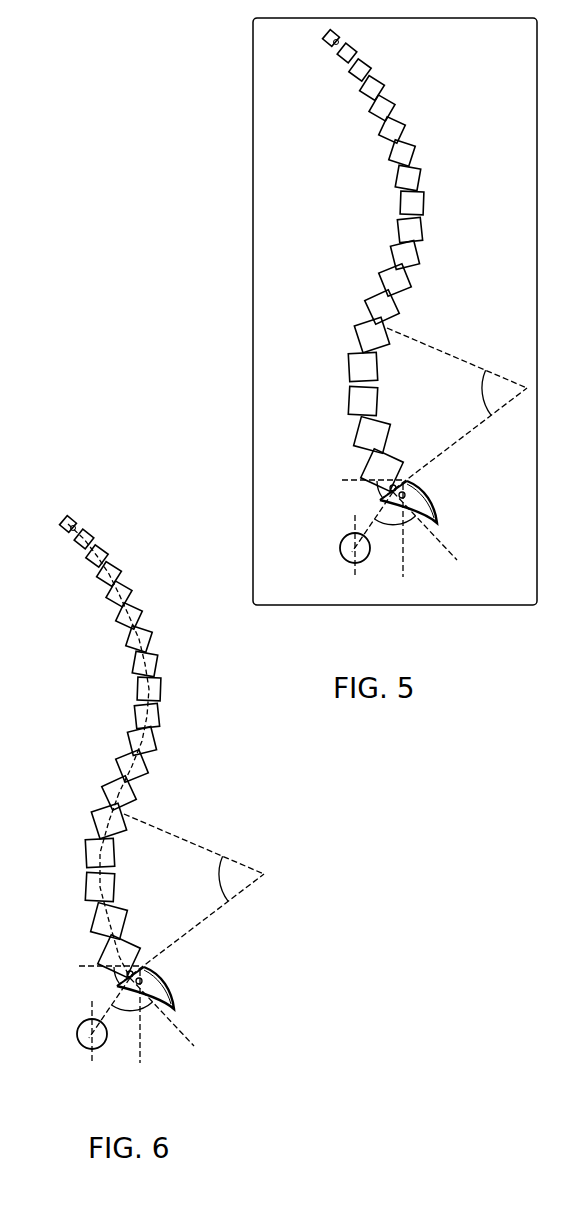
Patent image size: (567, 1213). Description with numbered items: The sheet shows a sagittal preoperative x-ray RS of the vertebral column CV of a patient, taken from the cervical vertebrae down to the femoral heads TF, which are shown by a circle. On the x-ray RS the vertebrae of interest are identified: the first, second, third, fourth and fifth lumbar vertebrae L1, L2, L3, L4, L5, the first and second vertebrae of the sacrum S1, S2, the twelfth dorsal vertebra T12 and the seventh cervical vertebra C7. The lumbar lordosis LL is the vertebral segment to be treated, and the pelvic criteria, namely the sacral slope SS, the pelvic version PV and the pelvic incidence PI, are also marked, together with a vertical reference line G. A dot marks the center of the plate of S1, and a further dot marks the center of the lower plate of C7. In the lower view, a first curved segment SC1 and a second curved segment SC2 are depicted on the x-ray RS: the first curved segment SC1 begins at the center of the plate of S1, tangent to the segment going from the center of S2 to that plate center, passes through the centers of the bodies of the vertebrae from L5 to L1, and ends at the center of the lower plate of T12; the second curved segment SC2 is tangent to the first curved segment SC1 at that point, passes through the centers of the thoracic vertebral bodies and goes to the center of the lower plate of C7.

In FIG. 5, the sagittal preoperative x-ray RS is at (253, 244).
In FIG. 6, the sagittal preoperative x-ray RS is at (12, 205).
In FIG. 5, the vertebral column CV is at (375, 261).
In FIG. 6, the vertebral column CV is at (112, 747).
In FIG. 5, the seventh cervical vertebra C7 is at (321, 38).
In FIG. 6, the seventh cervical vertebra C7 is at (58, 524).
In FIG. 5, the twelfth dorsal vertebra T12 is at (389, 307).
In FIG. 6, the twelfth dorsal vertebra T12 is at (126, 793).
In FIG. 5, the first lumbar vertebra L1 is at (374, 334).
In FIG. 6, the first lumbar vertebra L1 is at (111, 820).
In FIG. 5, the second lumbar vertebra L2 is at (370, 366).
In FIG. 6, the second lumbar vertebra L2 is at (107, 852).
In FIG. 5, the third lumbar vertebra L3 is at (370, 400).
In FIG. 6, the third lumbar vertebra L3 is at (107, 886).
In FIG. 5, the fourth lumbar vertebra L4 is at (378, 435).
In FIG. 6, the fourth lumbar vertebra L4 is at (115, 921).
In FIG. 5, the fifth lumbar vertebra L5 is at (387, 470).
In FIG. 6, the fifth lumbar vertebra L5 is at (124, 956).
In FIG. 5, the first vertebra of the sacrum S1 is at (403, 485).
In FIG. 6, the first vertebra of the sacrum S1 is at (140, 971).
In FIG. 5, the second vertebra of the sacrum S2 is at (409, 502).
In FIG. 6, the second vertebra of the sacrum S2 is at (146, 988).
In FIG. 5, the lumbar lordosis LL is at (453, 414).
In FIG. 6, the lumbar lordosis LL is at (190, 900).
In FIG. 5, the sacral slope SS is at (373, 489).
In FIG. 6, the sacral slope SS is at (110, 975).
In FIG. 5, the pelvic incidence PI is at (416, 526).
In FIG. 6, the pelvic incidence PI is at (153, 1012).
In FIG. 5, the pelvic version PV is at (372, 522).
In FIG. 6, the pelvic version PV is at (109, 1008).
In FIG. 5, the gravity line G is at (406, 530).
In FIG. 6, the gravity line G is at (143, 1016).
In FIG. 5, the femoral heads TF is at (344, 538).
In FIG. 6, the femoral heads TF is at (71, 1026).
In FIG. 6, the first curved segment SC1 is at (68, 885).
In FIG. 6, the second curved segment SC2 is at (104, 658).